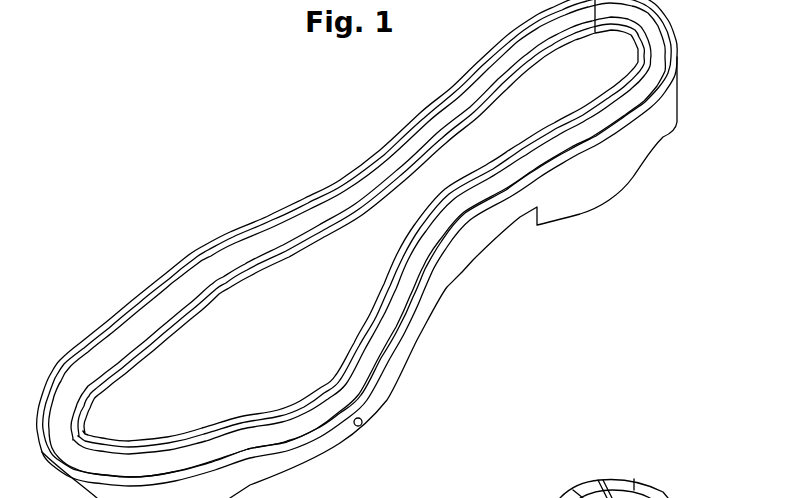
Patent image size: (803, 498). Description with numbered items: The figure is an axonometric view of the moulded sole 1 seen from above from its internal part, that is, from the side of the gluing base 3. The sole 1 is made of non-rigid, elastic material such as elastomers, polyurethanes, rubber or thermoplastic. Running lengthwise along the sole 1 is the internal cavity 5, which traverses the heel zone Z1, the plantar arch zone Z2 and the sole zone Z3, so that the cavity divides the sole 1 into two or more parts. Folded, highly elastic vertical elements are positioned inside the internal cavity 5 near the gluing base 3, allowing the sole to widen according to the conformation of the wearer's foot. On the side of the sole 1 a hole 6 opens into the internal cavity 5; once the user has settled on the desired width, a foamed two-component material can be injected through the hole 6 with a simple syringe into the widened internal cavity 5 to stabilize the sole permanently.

The sole 1 is at (633, 177).
The gluing base 3 is at (206, 277).
The internal cavity 5 is at (155, 330).
The hole 6 is at (363, 427).
The heel zone Z1 is at (586, 65).
The plantar arch zone Z2 is at (386, 232).
The sole zone Z3 is at (162, 415).